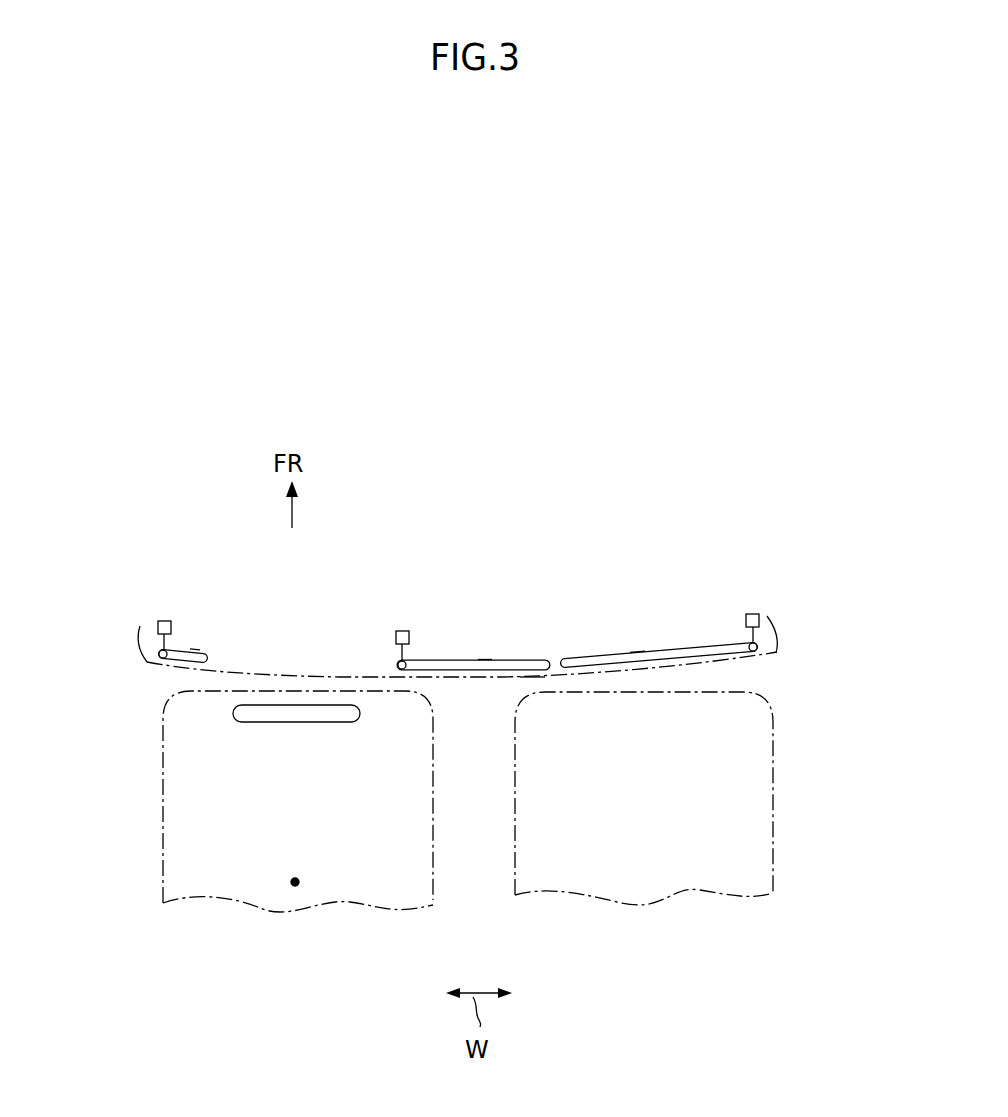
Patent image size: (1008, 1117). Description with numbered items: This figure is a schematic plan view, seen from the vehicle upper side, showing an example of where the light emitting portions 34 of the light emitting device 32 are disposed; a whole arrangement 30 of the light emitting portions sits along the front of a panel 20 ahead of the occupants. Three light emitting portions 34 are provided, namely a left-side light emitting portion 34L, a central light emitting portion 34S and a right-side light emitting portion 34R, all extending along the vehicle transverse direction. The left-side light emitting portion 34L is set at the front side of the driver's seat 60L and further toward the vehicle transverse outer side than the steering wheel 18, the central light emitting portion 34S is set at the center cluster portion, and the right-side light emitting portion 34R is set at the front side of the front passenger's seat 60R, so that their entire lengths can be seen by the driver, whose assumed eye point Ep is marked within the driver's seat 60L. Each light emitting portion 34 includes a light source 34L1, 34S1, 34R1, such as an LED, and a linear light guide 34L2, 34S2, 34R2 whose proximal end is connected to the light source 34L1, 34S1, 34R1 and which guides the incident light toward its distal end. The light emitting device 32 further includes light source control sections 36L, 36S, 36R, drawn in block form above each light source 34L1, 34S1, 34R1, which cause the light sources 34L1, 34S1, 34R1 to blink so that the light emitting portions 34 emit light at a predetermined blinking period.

The steering wheel 18 is at (255, 722).
The panel 20 is at (759, 663).
The sensor assembly 30 is at (465, 644).
The light emitting device 32 is at (531, 673).
The light emitting portions 34 is at (465, 669).
The left-side light emitting portion 34L is at (138, 669).
The light source 34L1 is at (158, 654).
The light guide 34L2 is at (193, 650).
The central light emitting portion 34S is at (416, 676).
The light source 34S1 is at (398, 663).
The light guide 34S2 is at (485, 658).
The right-side light emitting portion 34R is at (735, 667).
The light source 34R1 is at (772, 642).
The light guide 34R2 is at (637, 652).
The light source control section 36L is at (157, 628).
The light source control section 36S is at (395, 637).
The light source control section 36R is at (745, 620).
The driver's seat 60L is at (162, 862).
The front passenger's seat 60R is at (775, 853).
The eye point Ep is at (295, 877).